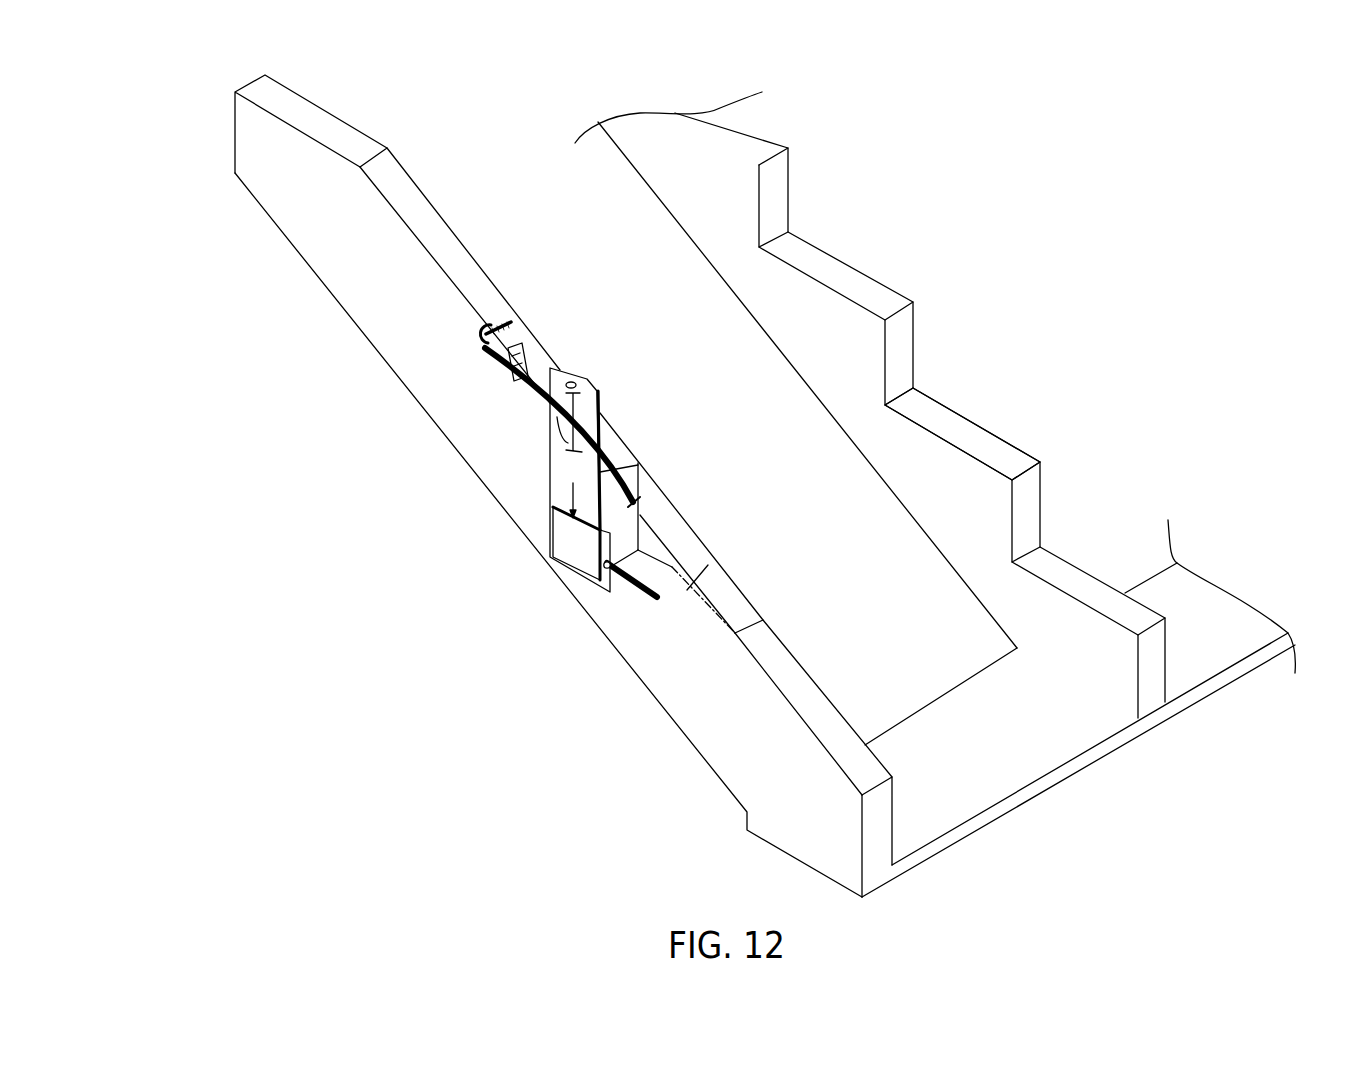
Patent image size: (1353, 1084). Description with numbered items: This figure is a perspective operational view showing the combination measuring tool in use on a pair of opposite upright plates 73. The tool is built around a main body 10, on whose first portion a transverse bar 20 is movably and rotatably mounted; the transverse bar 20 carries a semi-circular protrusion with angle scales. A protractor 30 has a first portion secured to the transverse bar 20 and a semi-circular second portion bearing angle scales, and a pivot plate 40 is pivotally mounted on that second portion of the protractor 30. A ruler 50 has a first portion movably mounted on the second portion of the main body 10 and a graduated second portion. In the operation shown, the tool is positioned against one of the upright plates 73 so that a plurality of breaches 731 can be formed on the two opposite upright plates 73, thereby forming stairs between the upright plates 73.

The main body 10 is at (590, 379).
The transverse bar 20 is at (615, 464).
The protractor 30 is at (469, 347).
The pivot plate 40 is at (498, 323).
The ruler 50 is at (630, 592).
The upright plate 73 is at (325, 230).
The breach 731 is at (963, 433).